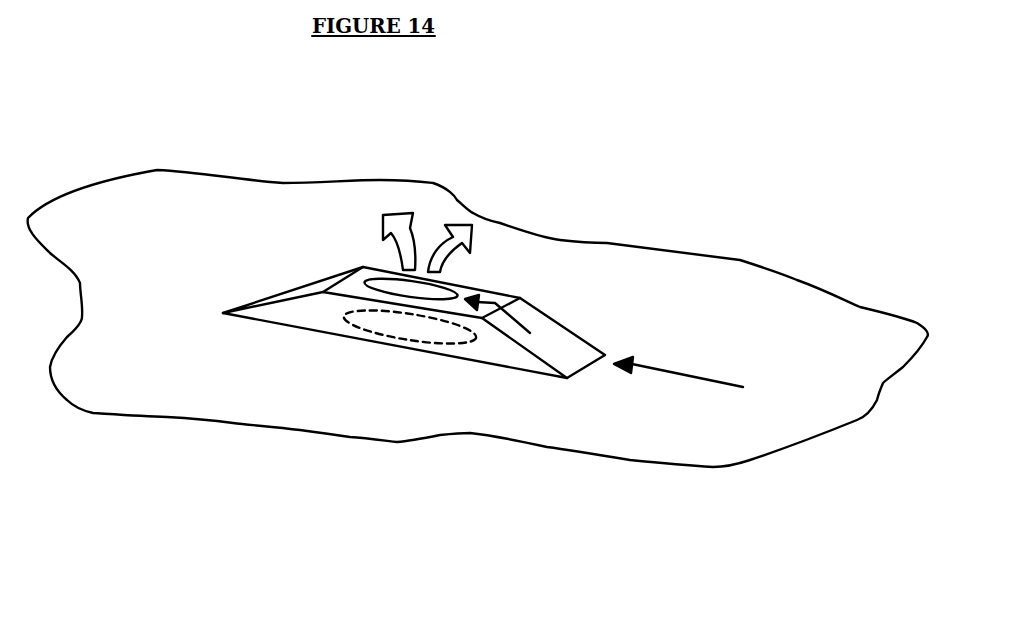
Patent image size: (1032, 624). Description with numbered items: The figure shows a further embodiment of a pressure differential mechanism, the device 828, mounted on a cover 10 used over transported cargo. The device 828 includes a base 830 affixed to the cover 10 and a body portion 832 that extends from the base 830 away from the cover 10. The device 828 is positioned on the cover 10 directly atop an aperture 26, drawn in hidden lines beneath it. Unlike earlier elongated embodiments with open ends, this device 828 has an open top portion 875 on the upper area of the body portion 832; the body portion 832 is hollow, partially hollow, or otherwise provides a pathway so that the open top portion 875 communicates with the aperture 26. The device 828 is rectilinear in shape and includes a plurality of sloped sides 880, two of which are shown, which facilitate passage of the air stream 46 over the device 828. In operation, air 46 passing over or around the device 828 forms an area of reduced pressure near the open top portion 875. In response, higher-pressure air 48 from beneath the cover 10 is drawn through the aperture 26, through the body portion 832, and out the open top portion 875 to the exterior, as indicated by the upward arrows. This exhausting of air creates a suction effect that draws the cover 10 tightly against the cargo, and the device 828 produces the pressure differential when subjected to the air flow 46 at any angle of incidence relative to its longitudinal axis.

The cover 10 is at (857, 337).
The aperture 26 is at (417, 333).
The air stream 46 is at (498, 306).
The air 48 is at (397, 213).
The pressure differential device 828 is at (288, 280).
The base 830 is at (328, 335).
The body portion 832 is at (480, 293).
The open top portion 875 is at (437, 290).
The sloped side 880 is at (547, 343).